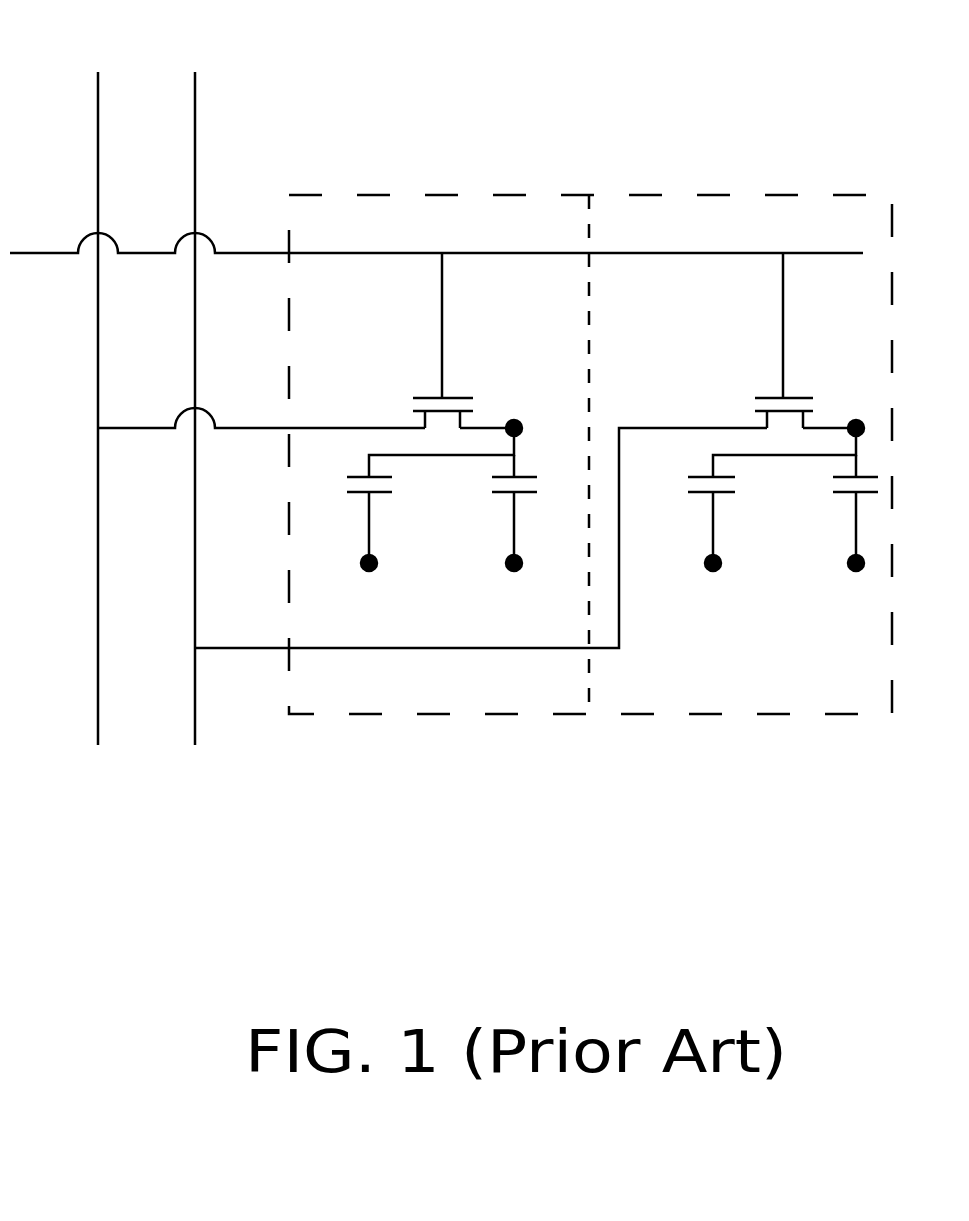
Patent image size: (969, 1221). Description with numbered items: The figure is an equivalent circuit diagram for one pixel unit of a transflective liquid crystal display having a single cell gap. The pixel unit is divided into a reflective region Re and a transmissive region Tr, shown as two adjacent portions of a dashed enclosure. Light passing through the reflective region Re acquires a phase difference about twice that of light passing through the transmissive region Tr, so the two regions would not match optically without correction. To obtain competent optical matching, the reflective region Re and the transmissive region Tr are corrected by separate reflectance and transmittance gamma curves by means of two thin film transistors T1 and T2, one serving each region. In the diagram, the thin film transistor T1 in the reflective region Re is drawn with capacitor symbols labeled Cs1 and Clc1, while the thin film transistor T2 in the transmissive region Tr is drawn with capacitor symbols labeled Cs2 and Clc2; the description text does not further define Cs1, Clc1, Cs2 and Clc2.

The reflective region Re is at (446, 194).
The transmissive region Tr is at (738, 194).
The thin film transistor T1 is at (430, 340).
The thin film transistor T2 is at (771, 340).
The first storage capacitor Cs1 is at (347, 524).
The first liquid crystal capacitor Clc1 is at (489, 524).
The second storage capacitor Cs2 is at (688, 524).
The second liquid crystal capacitor Clc2 is at (829, 524).